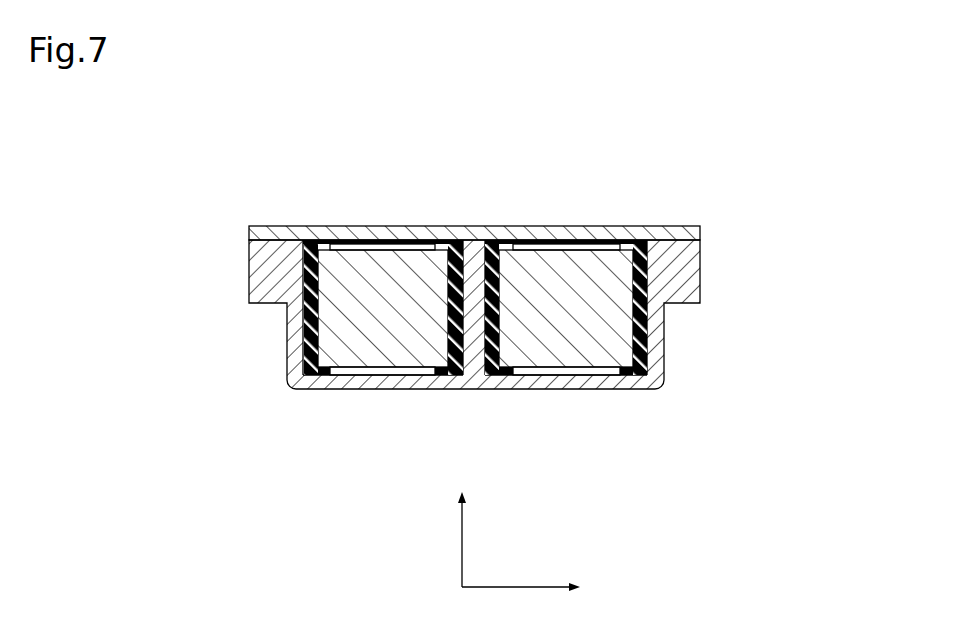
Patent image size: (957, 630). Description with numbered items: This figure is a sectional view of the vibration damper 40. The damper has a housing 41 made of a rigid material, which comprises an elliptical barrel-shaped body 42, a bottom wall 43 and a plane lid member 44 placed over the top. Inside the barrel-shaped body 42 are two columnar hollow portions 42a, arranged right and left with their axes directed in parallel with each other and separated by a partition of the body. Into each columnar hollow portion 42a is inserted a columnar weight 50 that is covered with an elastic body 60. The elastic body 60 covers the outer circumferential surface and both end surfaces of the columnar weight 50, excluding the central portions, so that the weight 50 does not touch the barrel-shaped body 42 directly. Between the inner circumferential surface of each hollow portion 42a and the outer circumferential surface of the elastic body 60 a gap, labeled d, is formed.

The vibration damper 40 is at (461, 157).
The housing 41 is at (249, 323).
The elliptical barrel-shaped body 42 is at (665, 332).
The columnar hollow portion 42a is at (377, 372).
The bottom wall 43 is at (472, 390).
The plane lid member 44 is at (473, 227).
The columnar weight 50 is at (385, 268).
The elastic body 60 is at (308, 330).